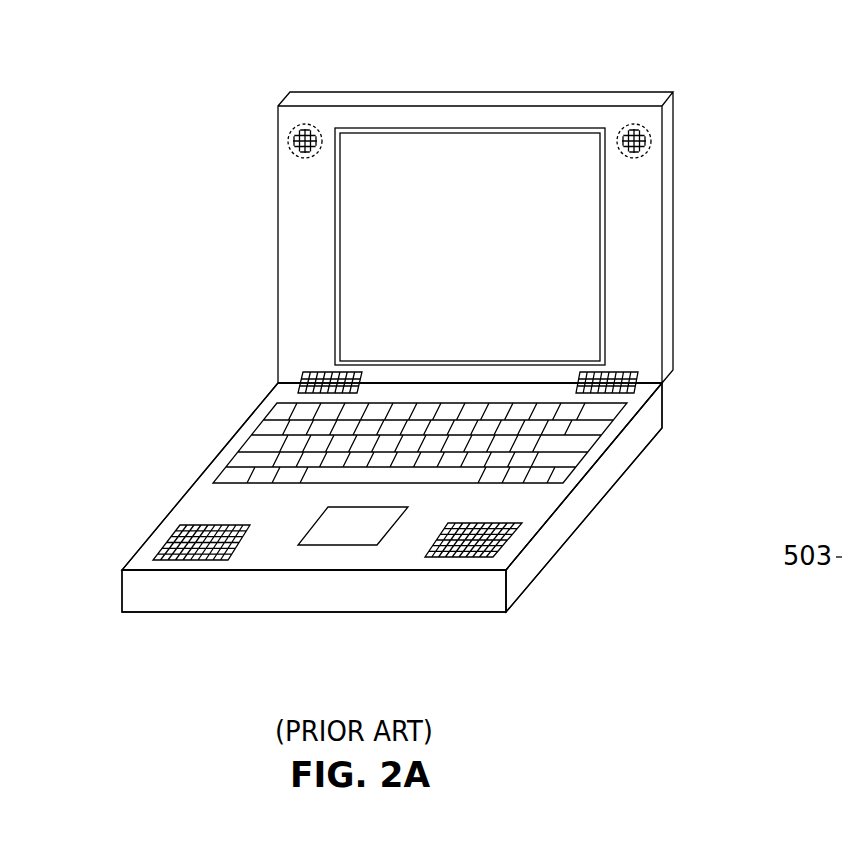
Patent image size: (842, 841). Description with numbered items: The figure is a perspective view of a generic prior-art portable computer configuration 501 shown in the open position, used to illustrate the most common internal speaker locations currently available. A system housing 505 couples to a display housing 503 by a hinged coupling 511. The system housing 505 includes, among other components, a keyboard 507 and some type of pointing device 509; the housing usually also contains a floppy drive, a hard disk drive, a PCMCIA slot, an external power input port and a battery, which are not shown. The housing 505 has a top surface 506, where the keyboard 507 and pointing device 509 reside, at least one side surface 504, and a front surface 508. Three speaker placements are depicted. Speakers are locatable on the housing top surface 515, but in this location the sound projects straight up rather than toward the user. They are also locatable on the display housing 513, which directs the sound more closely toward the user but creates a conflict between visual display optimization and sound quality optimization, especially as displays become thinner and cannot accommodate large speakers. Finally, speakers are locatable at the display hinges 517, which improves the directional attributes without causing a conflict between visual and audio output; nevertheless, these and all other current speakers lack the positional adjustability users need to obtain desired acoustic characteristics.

The portable computer configuration 501 is at (457, 378).
The display housing 503 is at (484, 242).
The side surface 504 is at (393, 517).
The system housing 505 is at (603, 518).
The top surface 506 is at (198, 504).
The keyboard 507 is at (595, 443).
The front surface 508 is at (233, 598).
The pointing device 509 is at (340, 535).
The hinged coupling 511 is at (278, 386).
The display housing speaker location 513 is at (288, 143).
The housing top surface speaker location 515 is at (166, 543).
The display hinge speaker location 517 is at (312, 368).